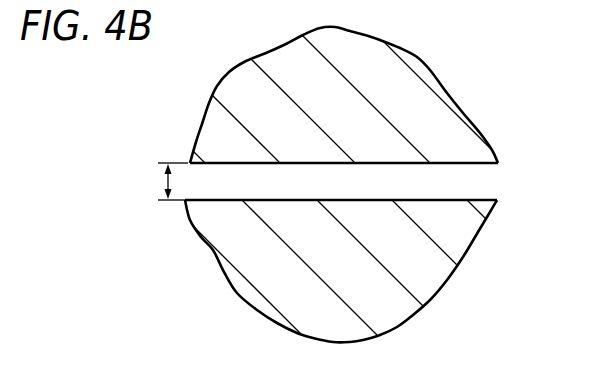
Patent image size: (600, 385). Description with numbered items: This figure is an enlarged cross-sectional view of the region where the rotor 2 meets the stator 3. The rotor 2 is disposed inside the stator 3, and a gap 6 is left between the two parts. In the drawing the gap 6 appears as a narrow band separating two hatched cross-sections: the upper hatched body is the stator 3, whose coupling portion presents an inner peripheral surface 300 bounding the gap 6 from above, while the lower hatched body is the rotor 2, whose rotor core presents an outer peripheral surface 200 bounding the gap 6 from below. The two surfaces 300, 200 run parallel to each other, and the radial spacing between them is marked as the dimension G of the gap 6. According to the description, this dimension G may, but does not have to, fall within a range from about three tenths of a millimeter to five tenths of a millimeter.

The stator 3 is at (238, 97).
The rotor 2 is at (263, 277).
The inner peripheral surface 300 is at (344, 181).
The outer peripheral surface 200 is at (341, 182).
The gap 6 is at (480, 182).
The dimension of the gap G is at (163, 181).